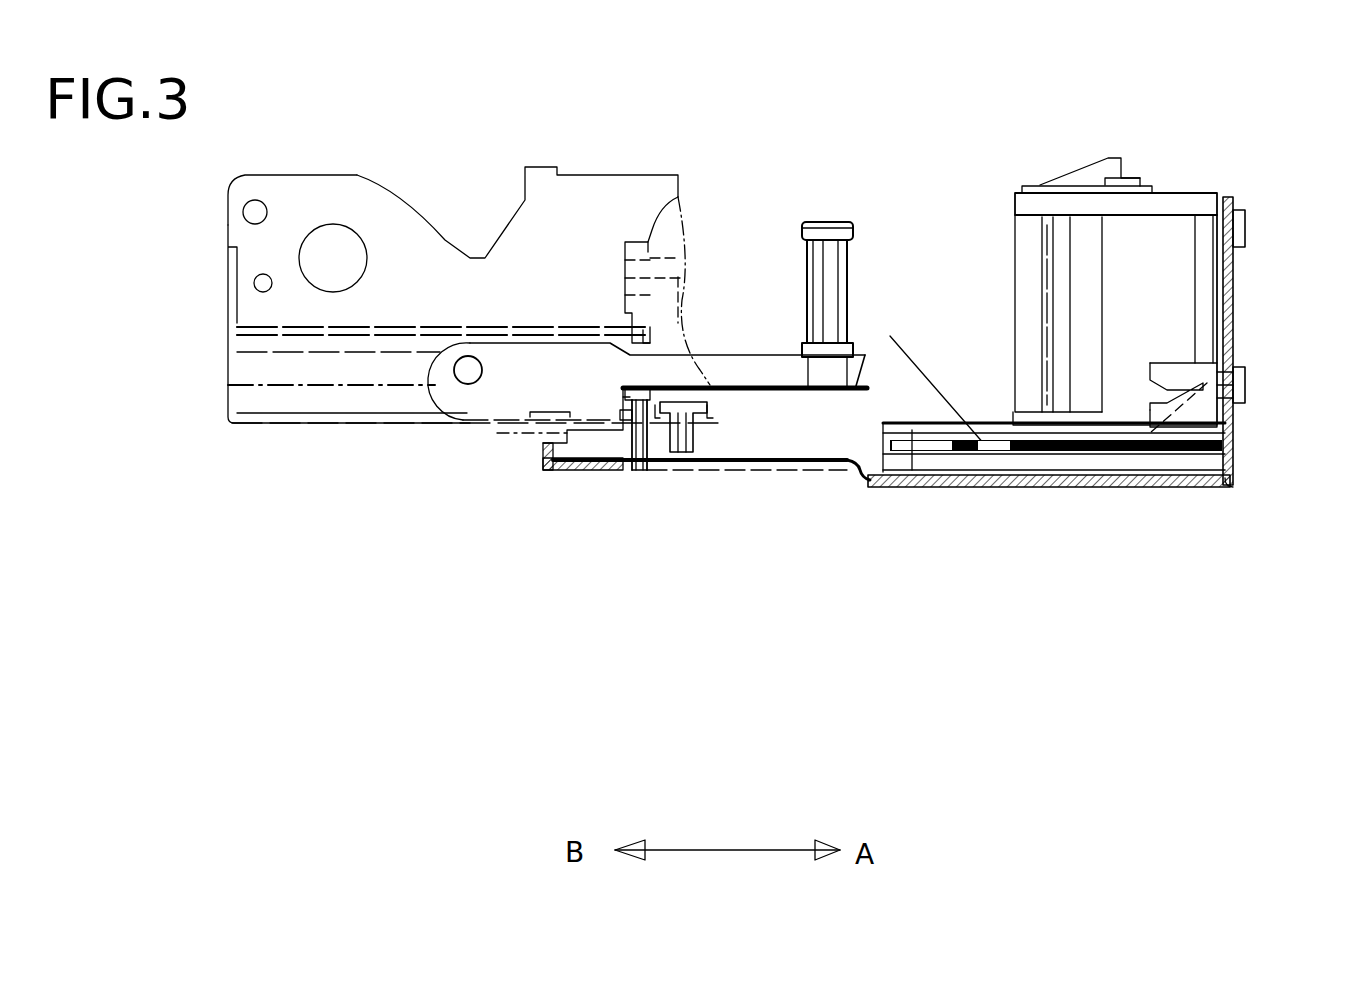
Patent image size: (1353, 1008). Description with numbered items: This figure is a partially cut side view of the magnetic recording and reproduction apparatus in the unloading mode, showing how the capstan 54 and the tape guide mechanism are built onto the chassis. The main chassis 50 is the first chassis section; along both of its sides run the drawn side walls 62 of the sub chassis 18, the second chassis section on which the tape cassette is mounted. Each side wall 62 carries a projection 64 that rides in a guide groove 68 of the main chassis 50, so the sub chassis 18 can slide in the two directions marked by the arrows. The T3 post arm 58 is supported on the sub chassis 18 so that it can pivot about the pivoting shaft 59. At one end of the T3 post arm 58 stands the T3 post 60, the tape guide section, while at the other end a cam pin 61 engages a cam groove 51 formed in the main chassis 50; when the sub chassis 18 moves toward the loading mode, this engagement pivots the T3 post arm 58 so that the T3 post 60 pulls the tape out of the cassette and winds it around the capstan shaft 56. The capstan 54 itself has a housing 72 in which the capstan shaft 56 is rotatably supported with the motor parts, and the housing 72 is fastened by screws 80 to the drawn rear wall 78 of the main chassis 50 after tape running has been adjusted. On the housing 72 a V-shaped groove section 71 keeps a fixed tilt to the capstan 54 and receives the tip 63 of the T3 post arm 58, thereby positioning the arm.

The sub chassis 18 is at (315, 193).
The main chassis 50 is at (962, 490).
The cam groove 51 is at (800, 468).
The capstan 54 is at (913, 437).
The capstan shaft 56 is at (1050, 330).
The T3 post arm 58 is at (771, 396).
The pivoting shaft 59 is at (682, 450).
The T3 post 60 is at (845, 278).
The cam pin 61 is at (637, 473).
The side wall 62 is at (513, 387).
The tip 63 is at (858, 386).
The projection 64 is at (466, 372).
The guide groove 68 is at (333, 372).
The V-shaped groove section 71 is at (1163, 372).
The housing 72 is at (1172, 212).
The rear wall 78 is at (1238, 290).
The screw 80 is at (1240, 223).